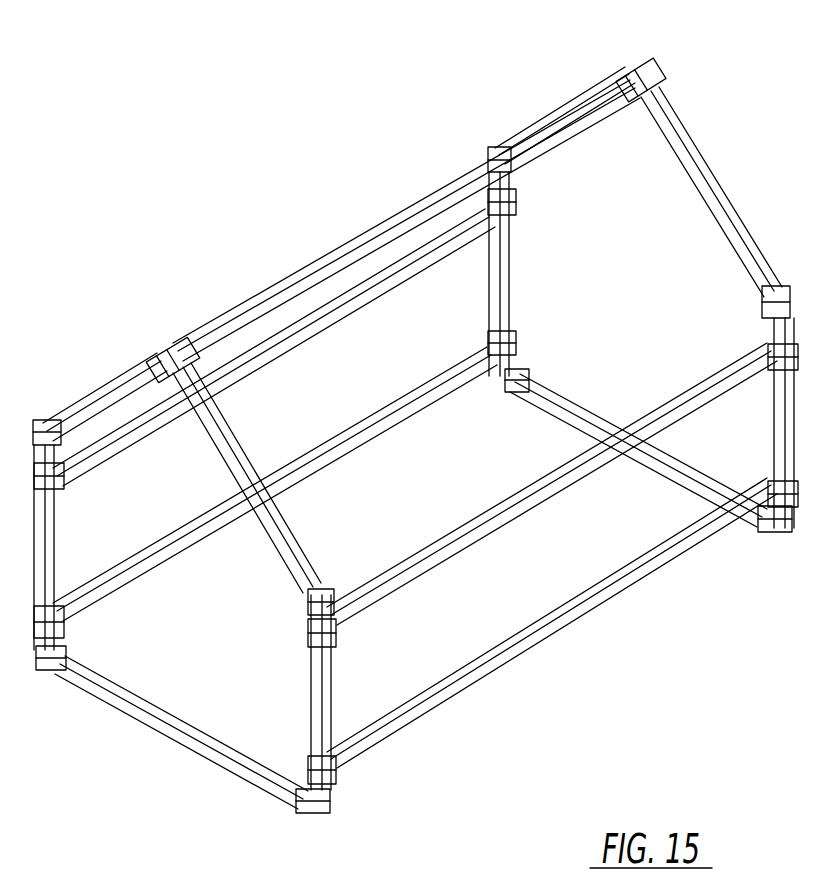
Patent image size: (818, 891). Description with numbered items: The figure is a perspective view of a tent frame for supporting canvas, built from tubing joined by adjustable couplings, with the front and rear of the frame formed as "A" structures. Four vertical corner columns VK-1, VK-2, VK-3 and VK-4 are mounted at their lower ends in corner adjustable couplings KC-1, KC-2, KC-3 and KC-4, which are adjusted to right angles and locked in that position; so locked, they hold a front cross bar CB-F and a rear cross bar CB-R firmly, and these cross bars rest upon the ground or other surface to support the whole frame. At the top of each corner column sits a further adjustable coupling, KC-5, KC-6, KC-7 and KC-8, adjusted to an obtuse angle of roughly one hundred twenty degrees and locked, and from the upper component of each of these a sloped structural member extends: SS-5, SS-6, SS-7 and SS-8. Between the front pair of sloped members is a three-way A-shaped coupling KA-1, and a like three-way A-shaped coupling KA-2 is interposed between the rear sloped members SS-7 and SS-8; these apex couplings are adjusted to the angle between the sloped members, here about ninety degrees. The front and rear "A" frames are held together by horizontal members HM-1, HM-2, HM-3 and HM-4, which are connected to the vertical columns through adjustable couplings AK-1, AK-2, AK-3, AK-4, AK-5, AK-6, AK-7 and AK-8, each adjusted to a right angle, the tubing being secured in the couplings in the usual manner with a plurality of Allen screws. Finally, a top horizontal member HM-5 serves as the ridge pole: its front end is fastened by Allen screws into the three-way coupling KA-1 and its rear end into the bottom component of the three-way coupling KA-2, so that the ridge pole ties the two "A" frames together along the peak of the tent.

The vertical corner column VK-1 is at (55, 560).
The vertical corner column VK-2 is at (326, 690).
The vertical corner column VK-3 is at (778, 416).
The vertical corner column VK-4 is at (511, 290).
The horizontal member HM-1 is at (398, 418).
The horizontal member HM-2 is at (540, 642).
The horizontal member HM-3 is at (542, 508).
The horizontal member HM-4 is at (366, 303).
The top horizontal member HM-5 is at (355, 246).
The sloped structural member SS-5 is at (131, 373).
The sloped structural member SS-6 is at (236, 426).
The sloped structural member SS-7 is at (714, 146).
The sloped structural member SS-8 is at (584, 104).
The front cross bar CB-F is at (153, 720).
The rear cross bar CB-R is at (566, 420).
The corner adjustable coupling KC-1 is at (56, 667).
The corner adjustable coupling KC-2 is at (314, 814).
The corner adjustable coupling KC-3 is at (770, 532).
The corner adjustable coupling KC-4 is at (524, 379).
The adjustable coupling KC-5 is at (47, 424).
The adjustable coupling KC-6 is at (328, 590).
The adjustable coupling KC-7 is at (764, 306).
The adjustable coupling KC-8 is at (493, 156).
The adjustable coupling AK-1 is at (62, 620).
The adjustable coupling AK-2 is at (336, 770).
The adjustable coupling AK-3 is at (770, 484).
The adjustable coupling AK-4 is at (514, 340).
The adjustable coupling AK-5 is at (61, 486).
The adjustable coupling AK-6 is at (306, 638).
The adjustable coupling AK-7 is at (770, 350).
The adjustable coupling AK-8 is at (516, 206).
The three-way A-shaped coupling KA-1 is at (177, 338).
The three-way A-shaped coupling KA-2 is at (652, 68).